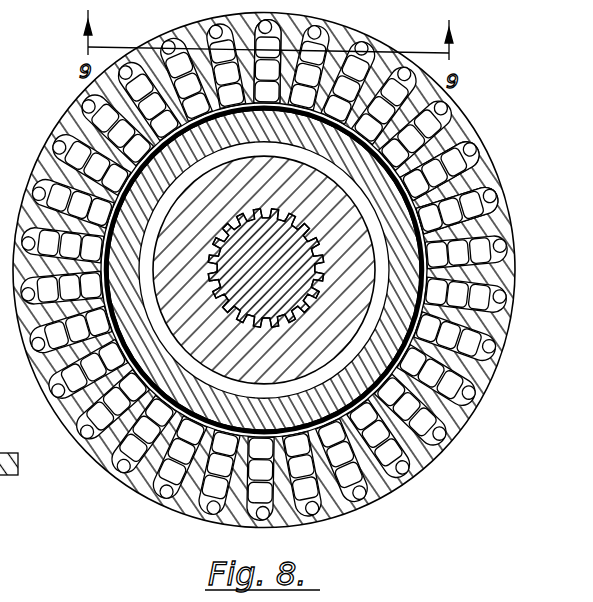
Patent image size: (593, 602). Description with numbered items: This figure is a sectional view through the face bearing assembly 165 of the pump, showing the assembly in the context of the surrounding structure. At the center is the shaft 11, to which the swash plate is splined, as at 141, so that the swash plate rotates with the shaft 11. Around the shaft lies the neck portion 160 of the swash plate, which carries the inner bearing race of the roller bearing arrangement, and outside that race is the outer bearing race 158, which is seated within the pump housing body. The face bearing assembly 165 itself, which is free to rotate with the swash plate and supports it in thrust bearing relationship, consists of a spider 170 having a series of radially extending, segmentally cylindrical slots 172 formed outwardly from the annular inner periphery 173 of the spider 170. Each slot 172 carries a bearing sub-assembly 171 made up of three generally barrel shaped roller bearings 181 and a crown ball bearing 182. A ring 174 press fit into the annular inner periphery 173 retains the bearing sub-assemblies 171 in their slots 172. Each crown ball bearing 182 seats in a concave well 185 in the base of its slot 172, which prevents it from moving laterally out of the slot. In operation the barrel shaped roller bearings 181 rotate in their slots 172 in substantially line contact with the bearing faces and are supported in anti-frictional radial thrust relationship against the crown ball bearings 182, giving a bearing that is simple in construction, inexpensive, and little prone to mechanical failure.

The shaft 11 is at (269, 309).
The spline 141 is at (282, 330).
The outer bearing race 158 is at (386, 338).
The neck portion 160 is at (319, 197).
The face bearing assembly 165 is at (427, 468).
The spider 170 is at (182, 503).
The bearing sub-assembly 171 is at (157, 478).
The segmentally cylindrical slot 172 is at (188, 347).
The annular inner periphery 173 is at (213, 415).
The ring 174 is at (198, 337).
The barrel shaped roller bearing 181 is at (462, 178).
The crown ball bearing 182 is at (272, 22).
The concave well 185 is at (452, 140).